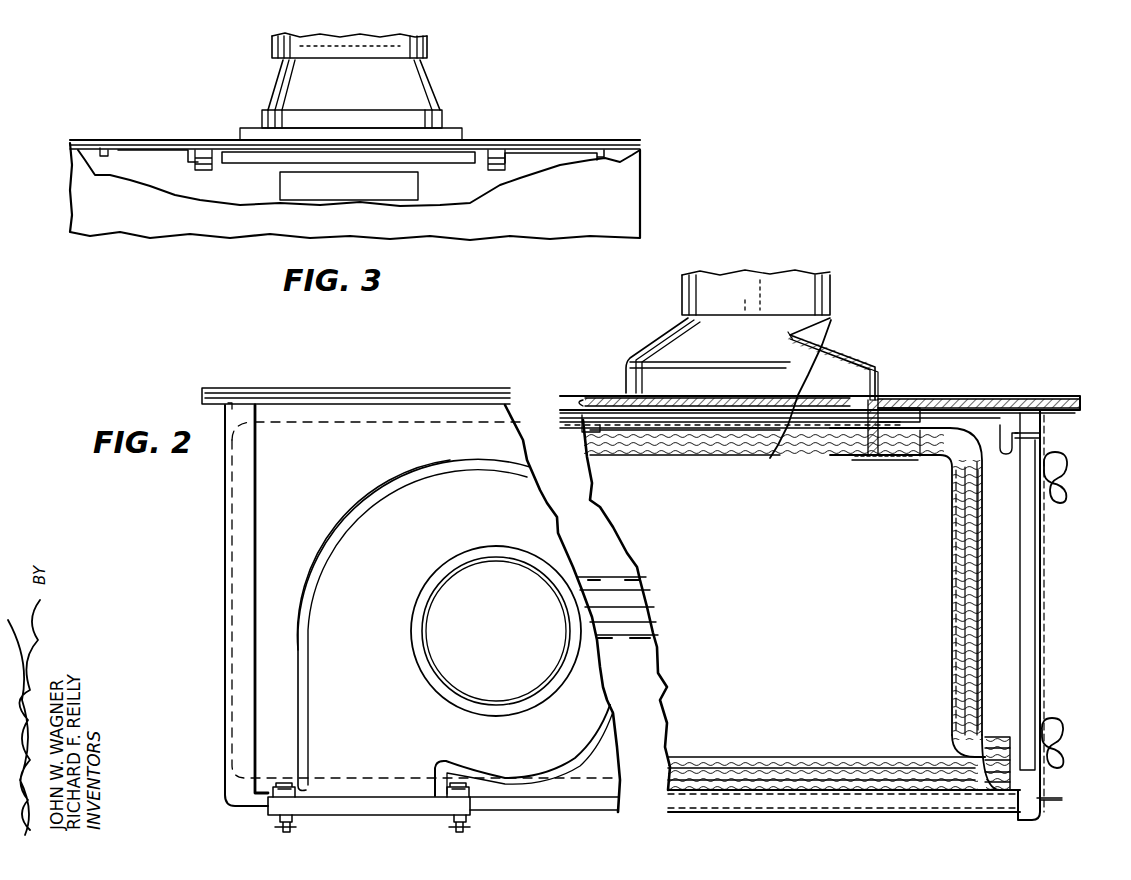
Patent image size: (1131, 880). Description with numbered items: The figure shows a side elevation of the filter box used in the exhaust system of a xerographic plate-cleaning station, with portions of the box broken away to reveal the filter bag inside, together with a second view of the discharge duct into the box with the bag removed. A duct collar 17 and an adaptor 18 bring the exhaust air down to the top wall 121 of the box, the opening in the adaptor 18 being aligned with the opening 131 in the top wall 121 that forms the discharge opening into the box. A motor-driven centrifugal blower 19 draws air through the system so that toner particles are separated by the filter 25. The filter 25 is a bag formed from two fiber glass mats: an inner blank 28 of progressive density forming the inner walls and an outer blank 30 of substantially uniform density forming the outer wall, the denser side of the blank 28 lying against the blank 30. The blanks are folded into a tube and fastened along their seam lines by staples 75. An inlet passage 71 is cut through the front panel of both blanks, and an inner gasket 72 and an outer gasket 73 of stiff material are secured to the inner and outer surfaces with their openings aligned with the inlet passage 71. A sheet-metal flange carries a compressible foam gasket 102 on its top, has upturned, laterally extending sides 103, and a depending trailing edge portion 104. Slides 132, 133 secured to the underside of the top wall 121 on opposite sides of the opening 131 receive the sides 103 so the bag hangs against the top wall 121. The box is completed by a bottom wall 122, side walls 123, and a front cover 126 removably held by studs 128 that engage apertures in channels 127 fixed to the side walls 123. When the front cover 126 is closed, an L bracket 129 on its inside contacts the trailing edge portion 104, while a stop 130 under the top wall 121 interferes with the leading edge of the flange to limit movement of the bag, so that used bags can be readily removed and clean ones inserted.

In FIG. 3, the exhaust duct collar 17 is at (428, 48).
In FIG. 2, the exhaust duct collar 17 is at (831, 300).
In FIG. 3, the adaptor 18 is at (447, 118).
In FIG. 2, the adaptor 18 is at (877, 372).
In FIG. 2, the motor-driven centrifugal blower 19 is at (318, 587).
In FIG. 2, the filter 25 is at (994, 645).
In FIG. 2, the flat blank of progressive-density fiber glass mat 28 is at (953, 546).
In FIG. 2, the flat blank of uniform-density fiber glass mat 30 is at (976, 548).
In FIG. 2, the inlet passage 71 is at (858, 455).
In FIG. 2, the inner gasket 72 is at (892, 456).
In FIG. 2, the outer gasket 73 is at (905, 456).
In FIG. 2, the staple 75 is at (985, 735).
In FIG. 2, the compressible gasket 102 is at (875, 413).
In FIG. 2, the upturned and laterally extending side 103 is at (745, 442).
In FIG. 2, the depending trailing edge portion 104 is at (1008, 456).
In FIG. 3, the top wall 121 is at (604, 146).
In FIG. 2, the top wall 121 is at (1040, 410).
In FIG. 2, the bottom wall 122 is at (936, 815).
In FIG. 2, the side wall 123 is at (348, 488).
In FIG. 3, the front cover 126 is at (637, 183).
In FIG. 2, the front cover 126 is at (1041, 559).
In FIG. 2, the channel 127 is at (1028, 656).
In FIG. 2, the stud 128 is at (1066, 458).
In FIG. 3, the L bracket 129 is at (278, 181).
In FIG. 2, the L bracket 129 is at (1044, 433).
In FIG. 3, the stop 130 is at (432, 162).
In FIG. 2, the stop 130 is at (580, 413).
In FIG. 2, the opening 131 is at (870, 400).
In FIG. 3, the slide 132 is at (128, 150).
In FIG. 3, the slide 133 is at (556, 157).
In FIG. 2, the slide 133 is at (706, 420).